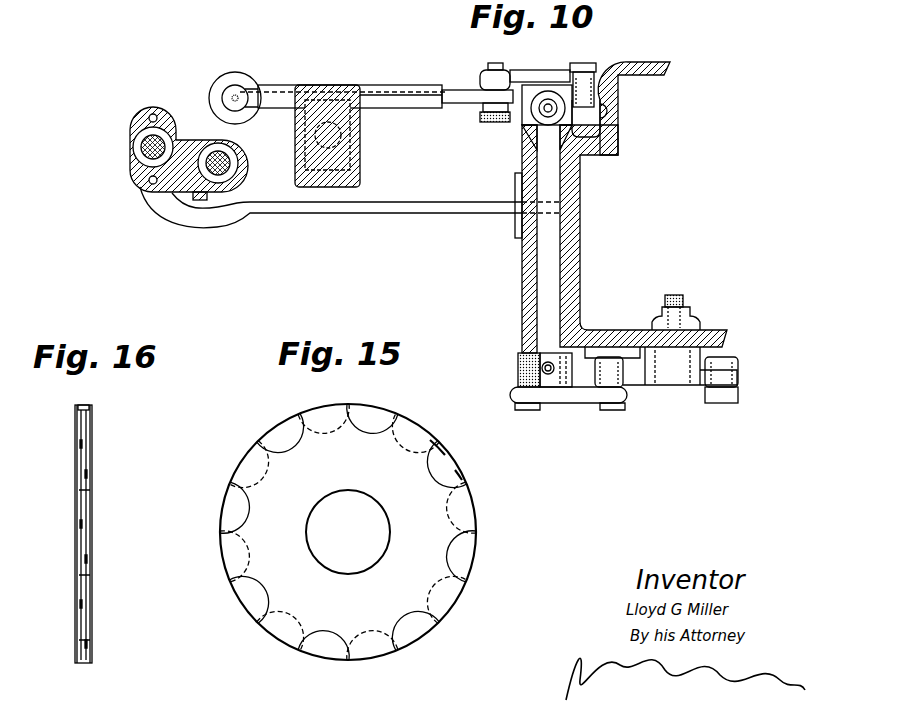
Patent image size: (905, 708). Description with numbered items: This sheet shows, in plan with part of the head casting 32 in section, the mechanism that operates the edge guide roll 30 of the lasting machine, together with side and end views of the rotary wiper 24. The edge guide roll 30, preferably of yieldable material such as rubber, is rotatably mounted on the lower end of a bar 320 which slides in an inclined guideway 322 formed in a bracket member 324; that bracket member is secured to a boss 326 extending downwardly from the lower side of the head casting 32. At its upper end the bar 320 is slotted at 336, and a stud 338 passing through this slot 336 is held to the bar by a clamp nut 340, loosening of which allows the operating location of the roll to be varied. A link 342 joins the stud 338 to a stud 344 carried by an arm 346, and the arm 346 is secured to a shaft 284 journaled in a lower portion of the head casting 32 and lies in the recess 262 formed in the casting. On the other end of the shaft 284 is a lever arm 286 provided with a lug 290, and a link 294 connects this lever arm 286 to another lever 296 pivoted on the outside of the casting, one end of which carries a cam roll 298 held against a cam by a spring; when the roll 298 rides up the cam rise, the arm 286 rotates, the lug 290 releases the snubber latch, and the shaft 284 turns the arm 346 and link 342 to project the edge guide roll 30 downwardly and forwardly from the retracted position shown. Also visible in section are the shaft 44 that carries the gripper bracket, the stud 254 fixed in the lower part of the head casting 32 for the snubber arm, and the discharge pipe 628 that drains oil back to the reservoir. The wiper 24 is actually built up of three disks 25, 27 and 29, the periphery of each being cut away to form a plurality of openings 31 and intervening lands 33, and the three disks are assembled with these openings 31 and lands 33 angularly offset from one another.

In FIG. 10, the edge guide roll 30 is at (226, 83).
In FIG. 10, the bracket member 324 is at (278, 84).
In FIG. 10, the inclined guideway 322 is at (400, 88).
In FIG. 10, the bar 320 is at (453, 89).
In FIG. 10, the boss 326 is at (360, 160).
In FIG. 10, the stud 338 is at (498, 68).
In FIG. 10, the link 342 is at (535, 72).
In FIG. 10, the stud 344 is at (586, 64).
In FIG. 10, the slot 336 is at (481, 104).
In FIG. 10, the clamp nut 340 is at (482, 120).
In FIG. 10, the arm 346 is at (608, 78).
In FIG. 10, the recess 262 is at (606, 114).
In FIG. 10, the shaft 44 is at (132, 154).
In FIG. 10, the stud 254 is at (239, 161).
In FIG. 10, the head casting 32 is at (581, 226).
In FIG. 10, the discharge pipe 628 is at (332, 215).
In FIG. 10, the shaft 284 is at (566, 280).
In FIG. 10, the lug 290 is at (546, 356).
In FIG. 10, the lever arm 286 is at (517, 366).
In FIG. 10, the link 294 is at (572, 404).
In FIG. 10, the lever 296 is at (634, 390).
In FIG. 10, the cam roll 298 is at (740, 395).
In FIG. 15, the rotary wiper 24 is at (237, 450).
In FIG. 16, the rotary wiper 24 is at (106, 432).
In FIG. 15, the disk 25 is at (420, 506).
In FIG. 16, the disk 25 is at (91, 476).
In FIG. 15, the disk 27 is at (373, 656).
In FIG. 16, the disk 27 is at (80, 430).
In FIG. 15, the disk 29 is at (312, 652).
In FIG. 16, the disk 29 is at (78, 466).
In FIG. 15, the lands 33 is at (434, 440).
In FIG. 15, the openings 31 is at (456, 476).